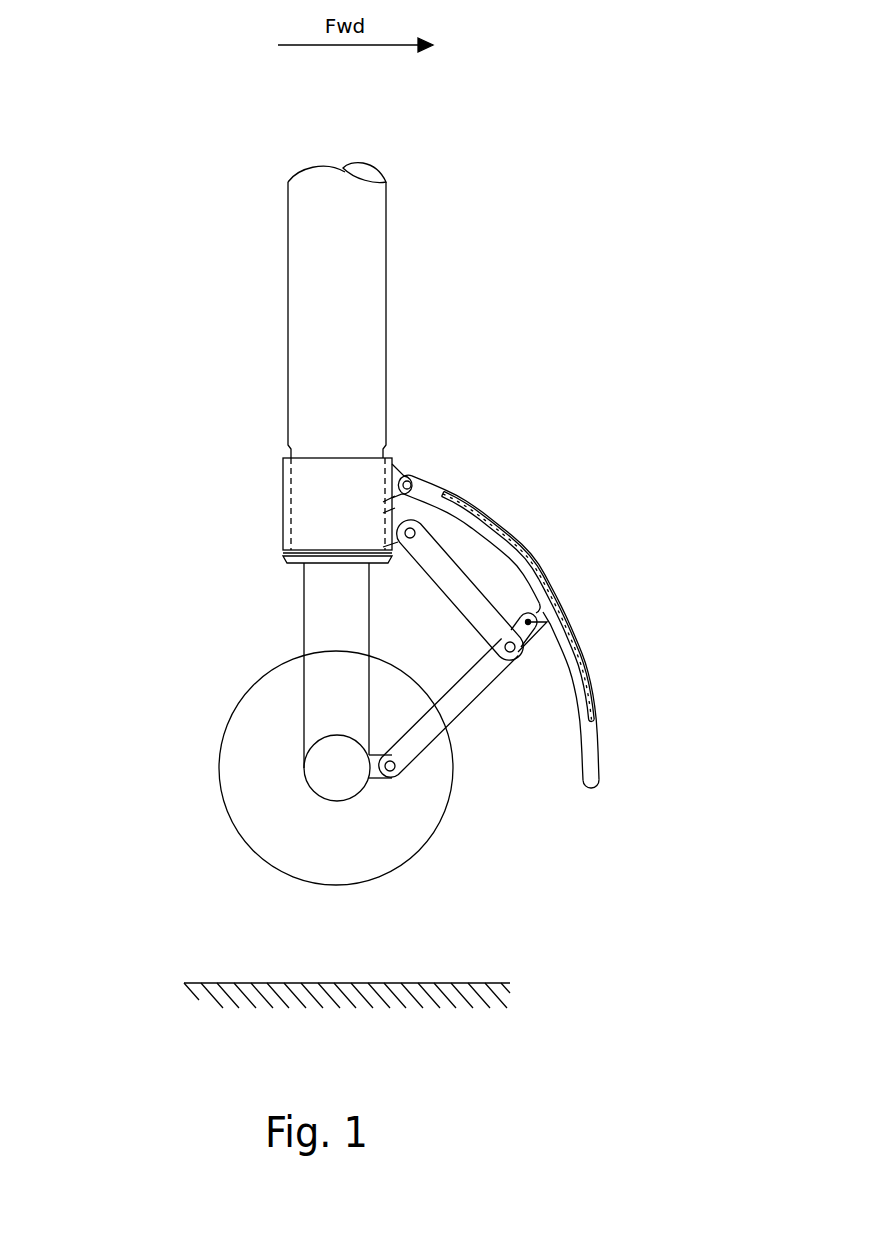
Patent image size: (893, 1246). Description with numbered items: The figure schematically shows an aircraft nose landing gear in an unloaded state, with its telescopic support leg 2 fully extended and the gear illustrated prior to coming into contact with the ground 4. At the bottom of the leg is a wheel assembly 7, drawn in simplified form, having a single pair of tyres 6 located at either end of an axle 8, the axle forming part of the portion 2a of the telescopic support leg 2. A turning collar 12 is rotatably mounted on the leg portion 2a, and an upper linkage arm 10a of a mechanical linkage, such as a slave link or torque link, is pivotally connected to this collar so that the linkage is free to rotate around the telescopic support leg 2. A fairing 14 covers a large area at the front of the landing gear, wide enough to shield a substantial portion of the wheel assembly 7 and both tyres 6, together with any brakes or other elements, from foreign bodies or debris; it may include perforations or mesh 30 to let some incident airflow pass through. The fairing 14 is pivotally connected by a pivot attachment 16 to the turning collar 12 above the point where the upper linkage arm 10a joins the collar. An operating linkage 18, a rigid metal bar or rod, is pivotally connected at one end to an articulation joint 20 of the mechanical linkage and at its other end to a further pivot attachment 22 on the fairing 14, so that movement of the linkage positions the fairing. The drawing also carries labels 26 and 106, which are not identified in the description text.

The telescopic support leg 2 is at (313, 470).
The upper leg portion 26 is at (315, 403).
The turning collar 12 is at (315, 490).
The portion of the telescopic support leg 2a is at (312, 602).
The pivot attachment 16 is at (412, 480).
The upper linkage arm 10a is at (428, 553).
The fairing 14 is at (497, 548).
The perforations or mesh 30 is at (532, 577).
The further pivot attachment 22 is at (527, 622).
The operating linkage 18 is at (523, 623).
The articulation joint 20 is at (517, 648).
The lower link 106 is at (477, 700).
The wheel assembly 7 is at (244, 778).
The tyres 6 is at (255, 748).
The axle 8 is at (340, 772).
The ground 4 is at (438, 983).